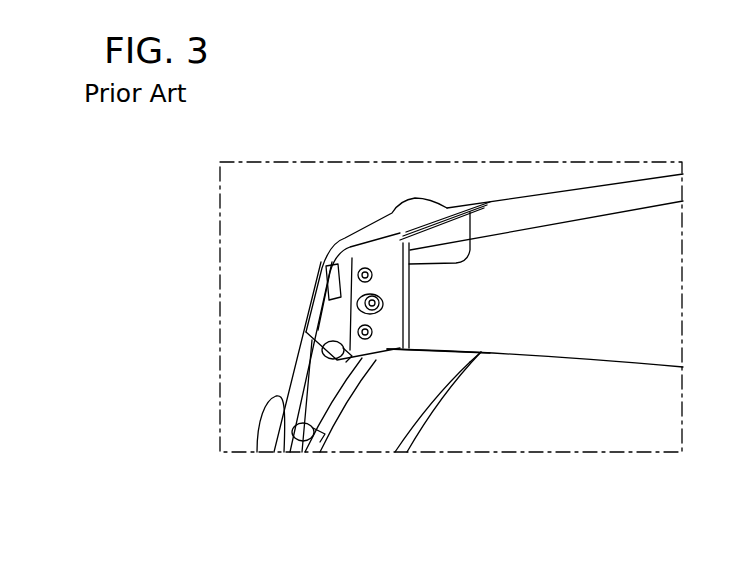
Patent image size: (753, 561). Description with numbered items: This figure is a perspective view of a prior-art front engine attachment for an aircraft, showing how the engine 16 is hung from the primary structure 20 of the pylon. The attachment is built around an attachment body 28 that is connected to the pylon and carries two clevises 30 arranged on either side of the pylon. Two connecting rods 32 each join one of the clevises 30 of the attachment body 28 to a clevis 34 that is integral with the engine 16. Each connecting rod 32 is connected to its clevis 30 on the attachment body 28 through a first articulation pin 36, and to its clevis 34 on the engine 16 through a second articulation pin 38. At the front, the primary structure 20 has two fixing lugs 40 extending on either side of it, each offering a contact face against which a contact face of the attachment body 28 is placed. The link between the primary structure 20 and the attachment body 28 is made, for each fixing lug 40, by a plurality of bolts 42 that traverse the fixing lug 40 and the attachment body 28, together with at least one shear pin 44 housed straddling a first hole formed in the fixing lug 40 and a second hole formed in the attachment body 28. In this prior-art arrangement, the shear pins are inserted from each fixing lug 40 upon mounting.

The engine 16 is at (434, 430).
The primary structure 20 is at (560, 195).
The attachment body 28 is at (374, 216).
The clevis 30 is at (305, 295).
The connecting rod 32 is at (290, 381).
The clevis 34 is at (283, 441).
The first articulation pin 36 is at (358, 368).
The second articulation pin 38 is at (340, 442).
The fixing lug 40 is at (318, 278).
The bolt 42 is at (399, 267).
The shear pin 44 is at (400, 292).